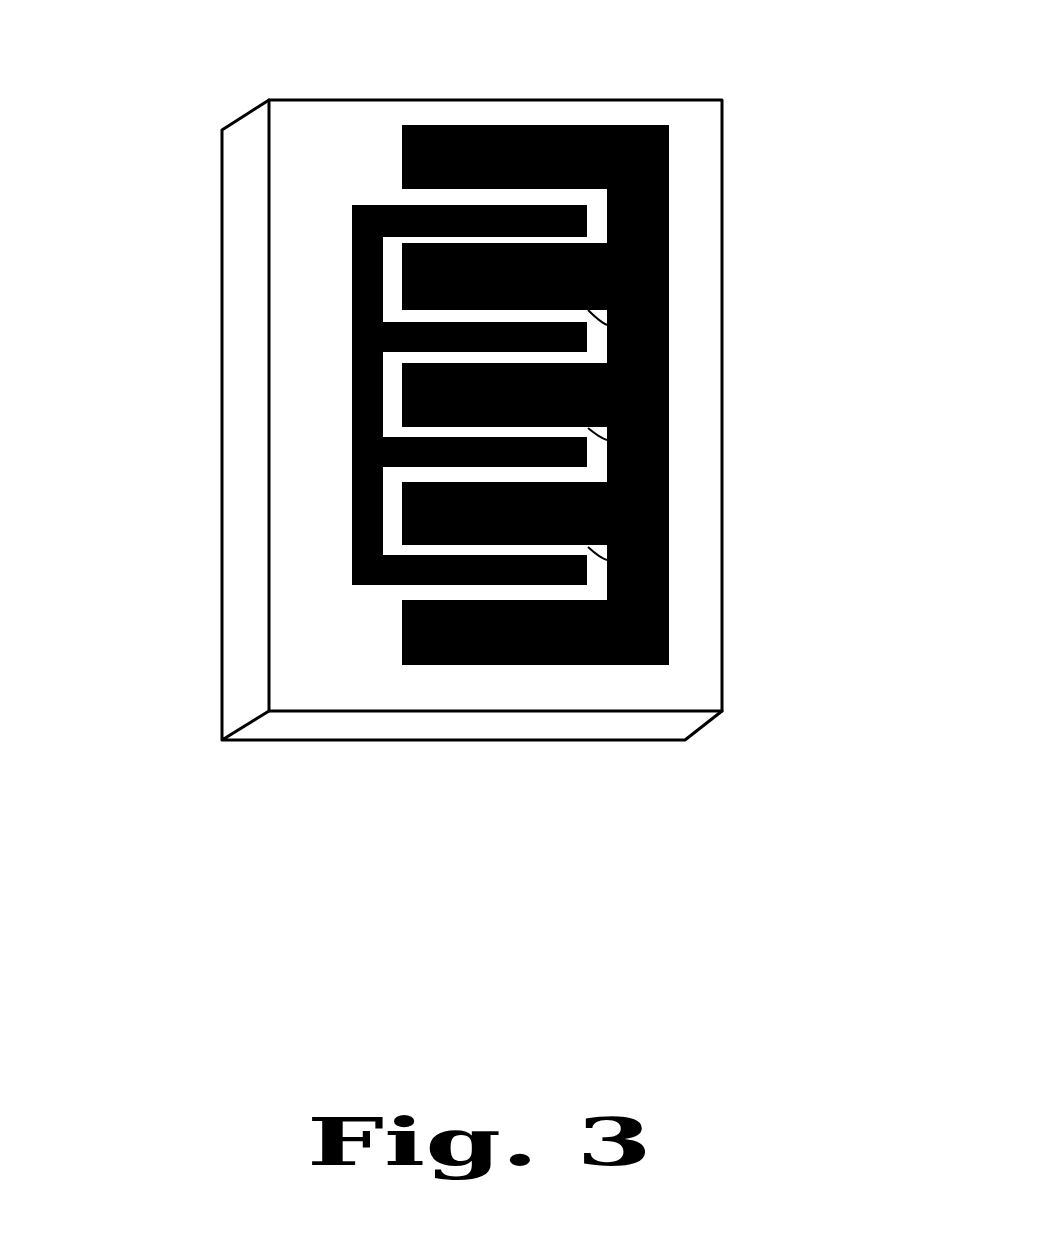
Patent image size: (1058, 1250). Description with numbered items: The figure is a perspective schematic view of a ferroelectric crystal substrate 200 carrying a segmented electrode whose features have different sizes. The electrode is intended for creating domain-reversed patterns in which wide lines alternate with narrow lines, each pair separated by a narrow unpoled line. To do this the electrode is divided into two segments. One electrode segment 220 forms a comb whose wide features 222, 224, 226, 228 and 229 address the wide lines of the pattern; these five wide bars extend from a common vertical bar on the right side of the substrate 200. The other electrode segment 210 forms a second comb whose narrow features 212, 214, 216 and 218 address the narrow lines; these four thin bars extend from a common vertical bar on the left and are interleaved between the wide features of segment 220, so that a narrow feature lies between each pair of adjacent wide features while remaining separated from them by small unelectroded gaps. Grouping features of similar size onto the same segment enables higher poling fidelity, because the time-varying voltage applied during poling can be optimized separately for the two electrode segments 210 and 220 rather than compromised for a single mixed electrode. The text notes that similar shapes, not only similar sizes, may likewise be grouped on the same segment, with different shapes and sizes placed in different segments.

The ferroelectric crystal substrate 200 is at (247, 142).
The electrode segment 210 is at (352, 522).
The feature 212 is at (405, 205).
The feature 214 is at (413, 322).
The feature 216 is at (407, 437).
The feature 218 is at (385, 585).
The electrode segment 220 is at (669, 505).
The feature 222 is at (590, 123).
The feature 224 is at (669, 335).
The feature 226 is at (669, 447).
The feature 228 is at (669, 570).
The feature 229 is at (570, 665).